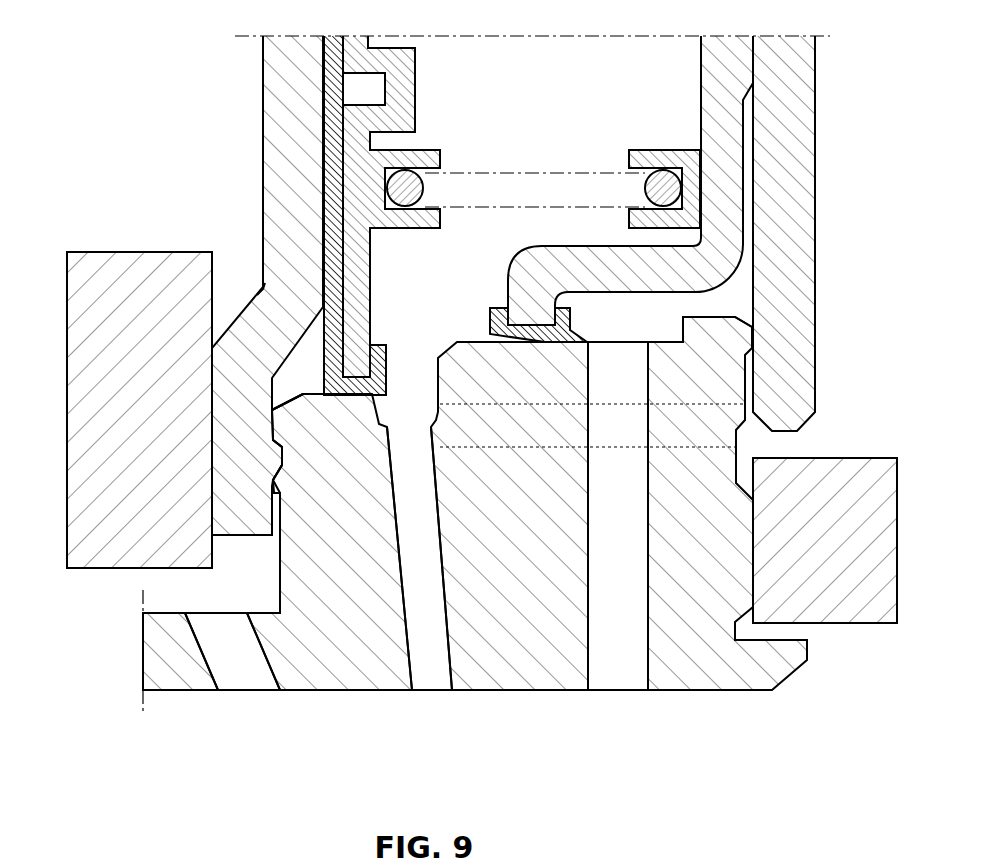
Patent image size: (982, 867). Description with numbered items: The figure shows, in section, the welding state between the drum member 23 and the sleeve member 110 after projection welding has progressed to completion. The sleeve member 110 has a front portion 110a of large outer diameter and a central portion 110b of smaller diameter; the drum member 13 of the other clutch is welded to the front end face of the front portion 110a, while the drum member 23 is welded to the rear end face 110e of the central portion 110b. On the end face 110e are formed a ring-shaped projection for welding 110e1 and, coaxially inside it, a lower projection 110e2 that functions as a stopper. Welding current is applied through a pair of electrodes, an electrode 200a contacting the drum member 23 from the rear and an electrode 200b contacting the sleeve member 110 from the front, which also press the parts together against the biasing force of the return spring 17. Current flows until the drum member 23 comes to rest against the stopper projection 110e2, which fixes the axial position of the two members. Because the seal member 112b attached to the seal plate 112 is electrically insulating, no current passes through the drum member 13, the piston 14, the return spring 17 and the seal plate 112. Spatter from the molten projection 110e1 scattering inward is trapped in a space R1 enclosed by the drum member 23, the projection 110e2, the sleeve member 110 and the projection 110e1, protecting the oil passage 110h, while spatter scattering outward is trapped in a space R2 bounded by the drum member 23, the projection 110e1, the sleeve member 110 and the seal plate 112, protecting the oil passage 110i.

The drum member 13 is at (815, 207).
The piston 14 is at (699, 97).
The return spring 17 is at (541, 170).
The drum member 23 is at (262, 150).
The sleeve member 110 is at (343, 692).
The front portion 110a is at (604, 427).
The central portion 110b is at (322, 466).
The end face 110e is at (280, 582).
The projection for welding 110e1 is at (298, 372).
The projection functioning as stopper 110e2 is at (283, 482).
The oil passage 110h is at (243, 663).
The oil passage 110i is at (433, 668).
The seal plate 112 is at (371, 237).
The seal member 112b is at (388, 350).
The electrode 200a is at (139, 410).
The electrode 200b is at (825, 540).
The space R1 is at (273, 452).
The space R2 is at (263, 285).